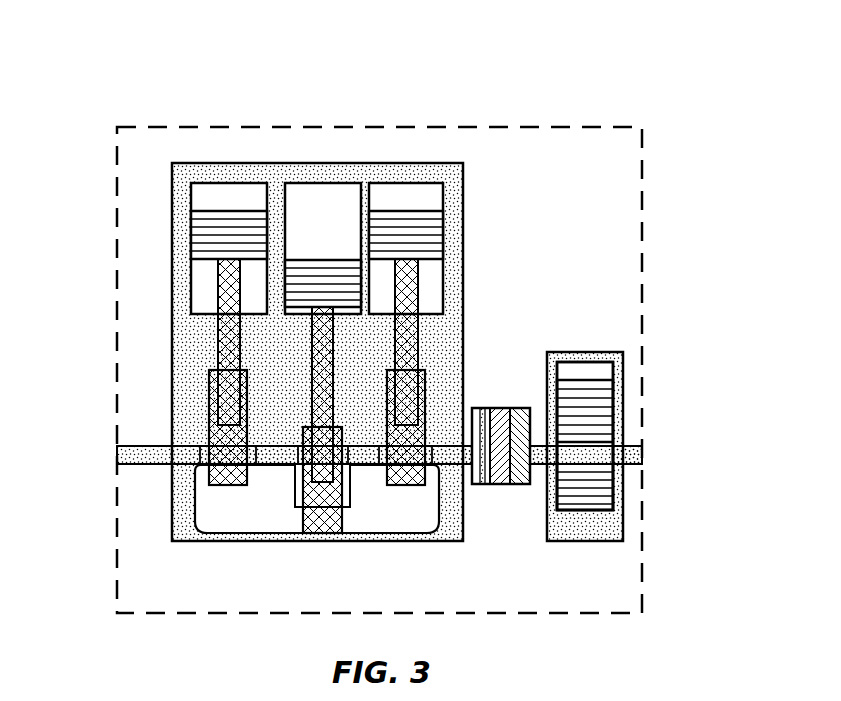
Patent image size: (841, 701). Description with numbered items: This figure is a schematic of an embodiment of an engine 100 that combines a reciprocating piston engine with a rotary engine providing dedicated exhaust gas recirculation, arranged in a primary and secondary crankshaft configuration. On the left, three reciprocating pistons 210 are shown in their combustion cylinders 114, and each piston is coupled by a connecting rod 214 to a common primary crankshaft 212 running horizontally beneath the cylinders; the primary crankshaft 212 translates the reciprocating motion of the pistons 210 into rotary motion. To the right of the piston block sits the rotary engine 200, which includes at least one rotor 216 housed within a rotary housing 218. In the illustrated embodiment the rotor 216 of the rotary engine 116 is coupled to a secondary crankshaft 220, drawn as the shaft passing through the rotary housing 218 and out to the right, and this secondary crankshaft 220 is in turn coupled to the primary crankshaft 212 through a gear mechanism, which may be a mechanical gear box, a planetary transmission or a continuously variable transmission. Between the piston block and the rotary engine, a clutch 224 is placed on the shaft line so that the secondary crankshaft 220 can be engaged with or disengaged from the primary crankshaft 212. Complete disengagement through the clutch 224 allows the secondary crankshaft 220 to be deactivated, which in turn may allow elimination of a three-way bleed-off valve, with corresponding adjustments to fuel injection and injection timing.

The engine 100 is at (150, 86).
The combustion cylinders 114 is at (433, 277).
The rotary engine 116 is at (605, 370).
The rotary engine 200 is at (616, 390).
The reciprocating pistons 210 is at (435, 220).
The primary crankshaft 212 is at (145, 455).
The connecting rods 214 is at (420, 340).
The rotor 216 is at (603, 428).
The rotary housing 218 is at (595, 350).
The secondary crankshaft 220 is at (510, 484).
The clutch 224 is at (480, 484).